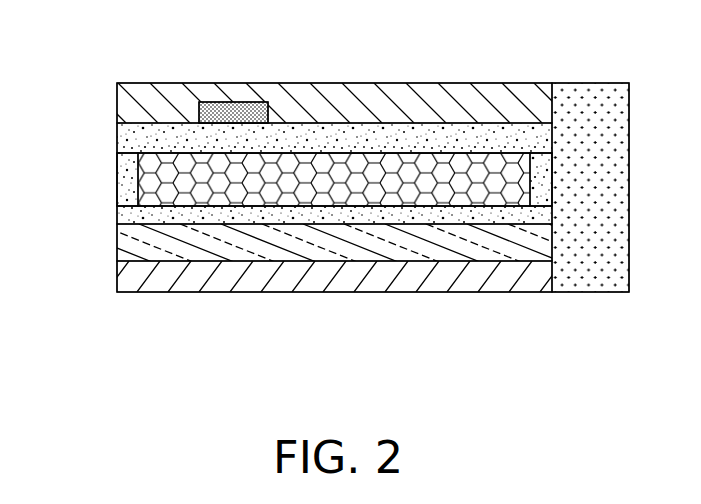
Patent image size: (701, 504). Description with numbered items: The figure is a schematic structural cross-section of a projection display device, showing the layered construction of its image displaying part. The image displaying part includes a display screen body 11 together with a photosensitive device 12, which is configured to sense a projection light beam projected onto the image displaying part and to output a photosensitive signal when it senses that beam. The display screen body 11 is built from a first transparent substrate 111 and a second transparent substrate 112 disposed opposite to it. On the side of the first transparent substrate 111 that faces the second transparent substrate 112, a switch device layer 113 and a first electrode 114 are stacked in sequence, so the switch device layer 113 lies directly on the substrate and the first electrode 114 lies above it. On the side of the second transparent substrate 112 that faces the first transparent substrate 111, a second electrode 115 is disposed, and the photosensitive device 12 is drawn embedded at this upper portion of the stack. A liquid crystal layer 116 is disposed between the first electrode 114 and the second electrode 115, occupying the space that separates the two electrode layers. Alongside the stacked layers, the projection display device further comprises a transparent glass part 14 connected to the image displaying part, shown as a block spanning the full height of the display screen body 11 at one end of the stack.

The display screen body 11 is at (175, 322).
The photosensitive device 12 is at (247, 108).
The transparent glass part 14 is at (582, 105).
The first transparent substrate 111 is at (130, 282).
The second transparent substrate 112 is at (137, 92).
The switch device layer 113 is at (130, 240).
The first electrode 114 is at (135, 214).
The second electrode 115 is at (128, 138).
The liquid crystal layer 116 is at (153, 178).